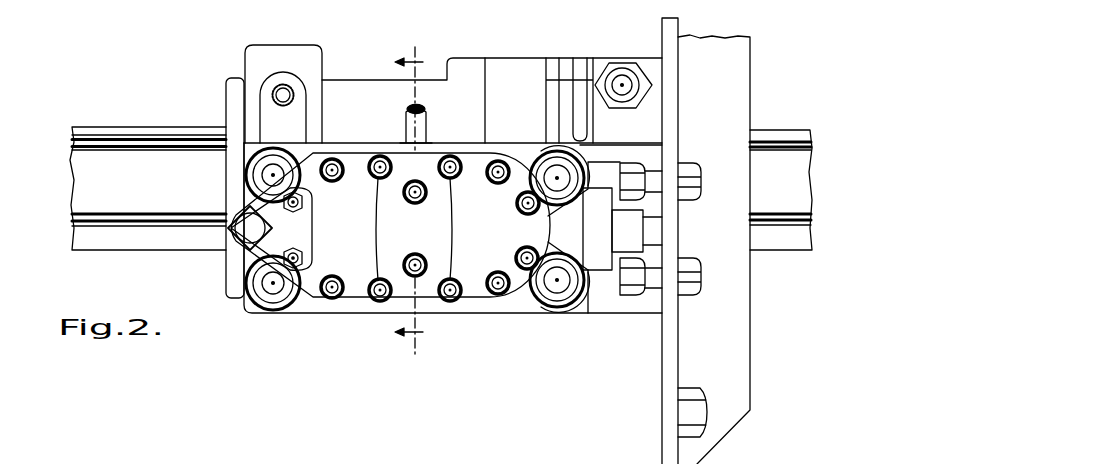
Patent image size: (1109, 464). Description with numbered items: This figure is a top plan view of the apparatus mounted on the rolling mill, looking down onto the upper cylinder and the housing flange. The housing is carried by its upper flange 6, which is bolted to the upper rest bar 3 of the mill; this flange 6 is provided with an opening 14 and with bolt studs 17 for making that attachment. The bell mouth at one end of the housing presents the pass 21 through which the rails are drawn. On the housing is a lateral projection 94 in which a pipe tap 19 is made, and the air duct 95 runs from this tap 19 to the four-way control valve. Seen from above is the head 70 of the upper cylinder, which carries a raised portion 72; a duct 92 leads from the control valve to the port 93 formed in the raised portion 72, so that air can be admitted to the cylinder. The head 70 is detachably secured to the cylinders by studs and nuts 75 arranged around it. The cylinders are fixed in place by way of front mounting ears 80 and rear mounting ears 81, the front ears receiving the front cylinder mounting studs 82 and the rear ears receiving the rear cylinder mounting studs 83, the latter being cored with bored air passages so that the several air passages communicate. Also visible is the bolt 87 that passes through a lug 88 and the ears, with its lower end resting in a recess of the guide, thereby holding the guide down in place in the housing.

The rest bar 3 is at (706, 241).
The upper flange 6 is at (683, 151).
The opening 14 is at (613, 238).
The bolt studs 17 is at (700, 180).
The pipe tap 19 is at (276, 80).
The pass 21 is at (598, 264).
The head of the upper cylinder 70 is at (391, 225).
The raised portion 72 is at (448, 250).
The studs and nuts 75 is at (472, 177).
The front mounting ears 80 is at (556, 160).
The rear mounting ears 81 is at (292, 147).
The front cylinder mounting studs 82 is at (542, 153).
The rear cylinder mounting studs 83 is at (258, 173).
The bolt 87 is at (233, 215).
The lug 88 is at (247, 261).
The duct 92 is at (425, 110).
The port 93 is at (428, 142).
The lateral projection 94 is at (290, 41).
The air duct 95 is at (273, 96).